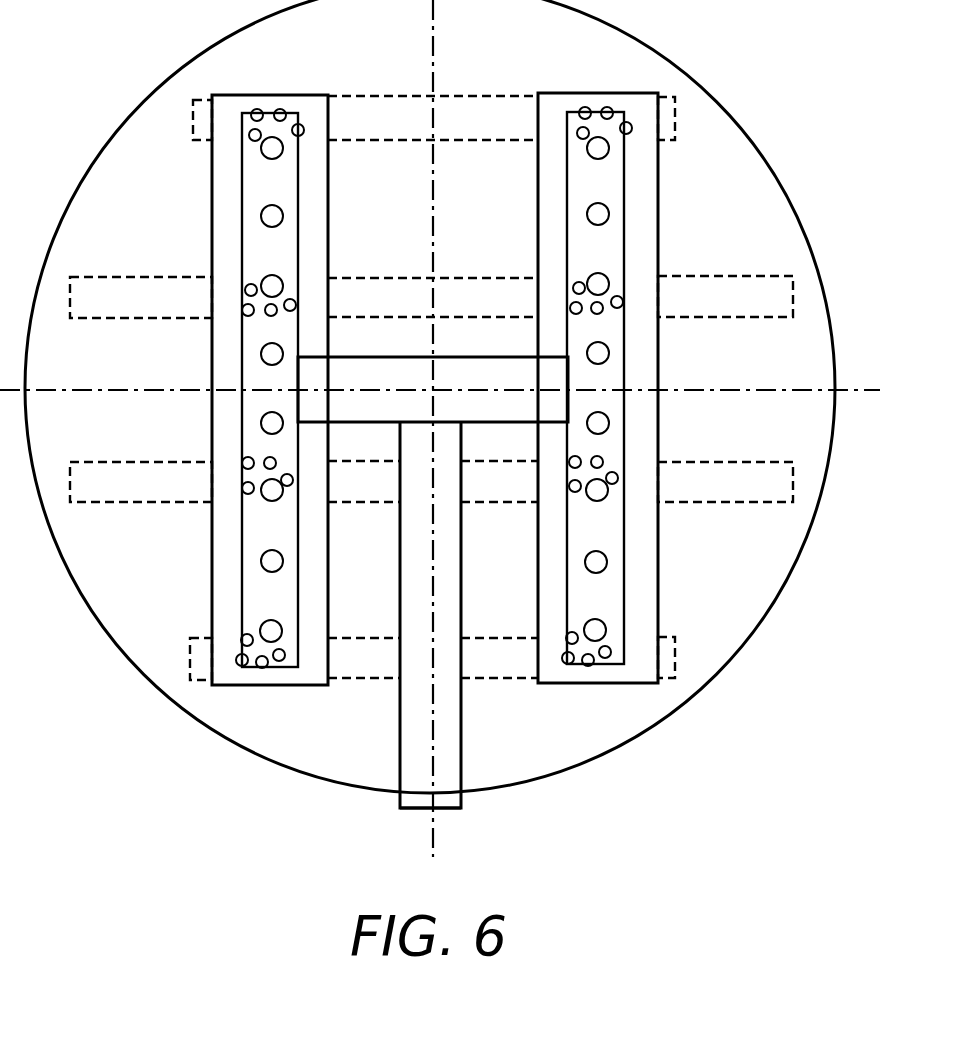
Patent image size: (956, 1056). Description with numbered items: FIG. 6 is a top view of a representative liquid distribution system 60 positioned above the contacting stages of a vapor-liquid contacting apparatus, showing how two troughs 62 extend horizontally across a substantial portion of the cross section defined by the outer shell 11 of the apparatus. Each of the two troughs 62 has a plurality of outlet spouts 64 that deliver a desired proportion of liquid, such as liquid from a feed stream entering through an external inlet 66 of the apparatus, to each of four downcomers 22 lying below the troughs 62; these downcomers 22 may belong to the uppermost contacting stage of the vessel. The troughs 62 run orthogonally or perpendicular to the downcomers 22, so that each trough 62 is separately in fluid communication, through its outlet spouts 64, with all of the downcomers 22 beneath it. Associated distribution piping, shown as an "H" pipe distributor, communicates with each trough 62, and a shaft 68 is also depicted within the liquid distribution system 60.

The outer shell 11 is at (637, 33).
The downcomers 22 is at (724, 288).
The liquid distribution system 60 is at (454, 451).
The troughs 62 is at (647, 188).
The outlet spouts 64 is at (585, 110).
The external inlet 66 is at (405, 810).
The shaft 68 is at (448, 703).